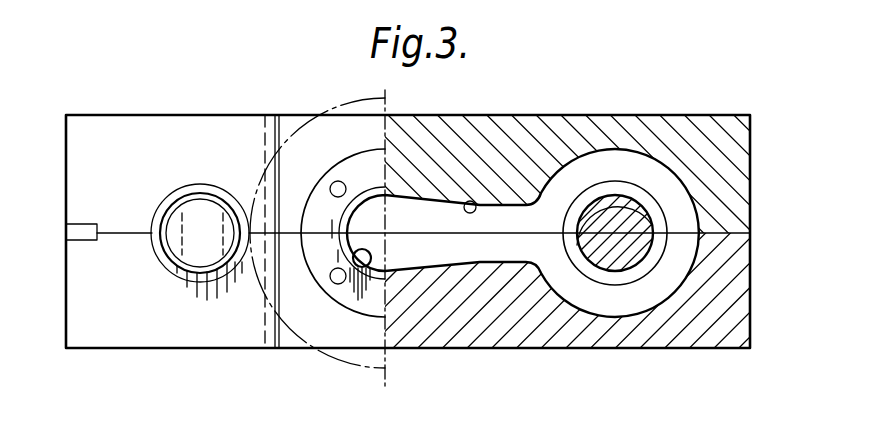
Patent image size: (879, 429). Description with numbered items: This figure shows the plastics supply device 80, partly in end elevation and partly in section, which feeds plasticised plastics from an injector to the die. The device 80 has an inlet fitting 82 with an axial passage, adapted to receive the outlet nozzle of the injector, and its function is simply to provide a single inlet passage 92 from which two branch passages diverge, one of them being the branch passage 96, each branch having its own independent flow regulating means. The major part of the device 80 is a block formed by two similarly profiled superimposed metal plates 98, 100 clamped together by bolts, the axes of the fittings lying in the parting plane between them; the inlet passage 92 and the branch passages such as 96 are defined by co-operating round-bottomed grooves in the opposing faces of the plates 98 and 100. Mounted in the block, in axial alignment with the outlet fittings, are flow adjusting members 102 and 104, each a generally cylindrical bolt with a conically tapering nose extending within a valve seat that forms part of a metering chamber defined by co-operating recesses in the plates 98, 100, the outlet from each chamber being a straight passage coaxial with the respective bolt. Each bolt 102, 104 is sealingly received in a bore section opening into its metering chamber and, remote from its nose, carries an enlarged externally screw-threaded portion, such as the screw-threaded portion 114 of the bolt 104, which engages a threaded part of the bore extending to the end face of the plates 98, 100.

The device 80 is at (752, 106).
The inlet fitting 82 is at (330, 110).
The single inlet passage 92 is at (357, 283).
The branch passage 96 is at (467, 202).
The plate 98 is at (720, 325).
The plate 100 is at (707, 127).
The flow adjusting member 102 is at (613, 200).
The flow adjusting member 104 is at (201, 205).
The externally screw-threaded portion 114 is at (187, 185).